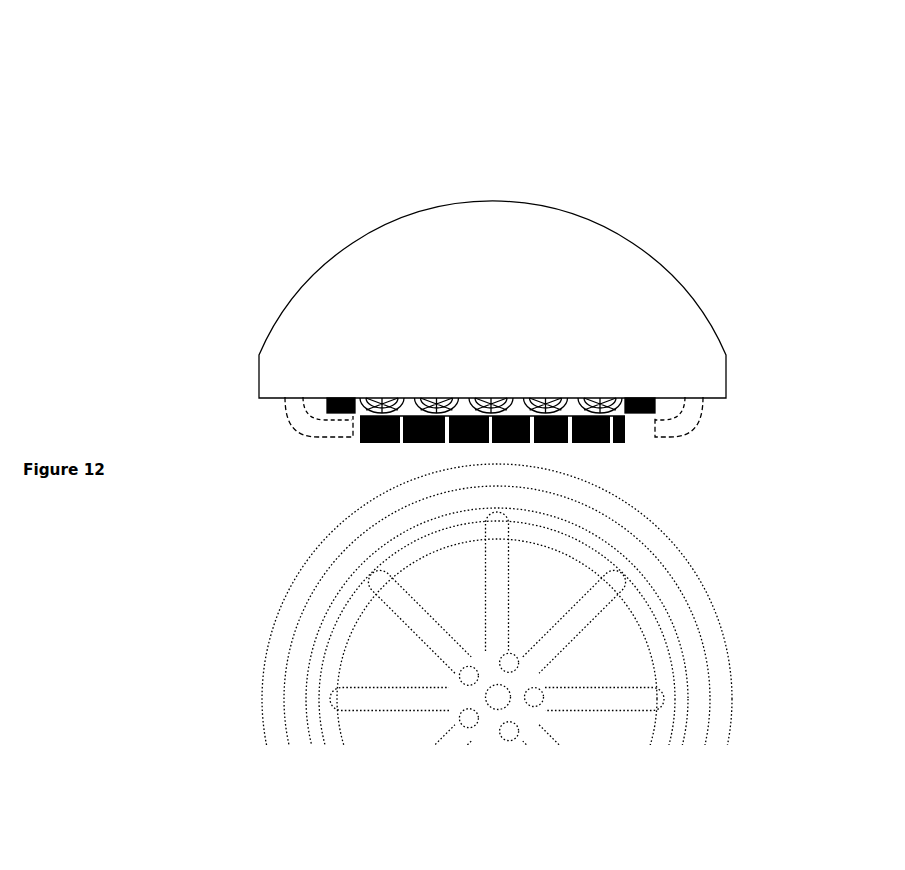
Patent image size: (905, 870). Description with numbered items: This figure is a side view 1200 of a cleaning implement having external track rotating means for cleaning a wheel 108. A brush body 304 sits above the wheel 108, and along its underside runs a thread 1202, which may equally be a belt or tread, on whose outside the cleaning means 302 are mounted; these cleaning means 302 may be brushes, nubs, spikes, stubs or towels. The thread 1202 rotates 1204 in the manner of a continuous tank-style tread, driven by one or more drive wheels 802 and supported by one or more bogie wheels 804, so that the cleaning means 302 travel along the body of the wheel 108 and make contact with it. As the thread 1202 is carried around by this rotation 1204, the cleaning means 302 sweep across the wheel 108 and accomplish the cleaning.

The side view 1200 is at (742, 122).
The brush body 304 is at (550, 188).
The cleaning means 302 is at (362, 442).
The drive wheel 802 is at (610, 410).
The bogie wheel 804 is at (497, 413).
The thread 1202 is at (345, 423).
The rotation 1204 is at (692, 418).
The wheel 108 is at (717, 658).